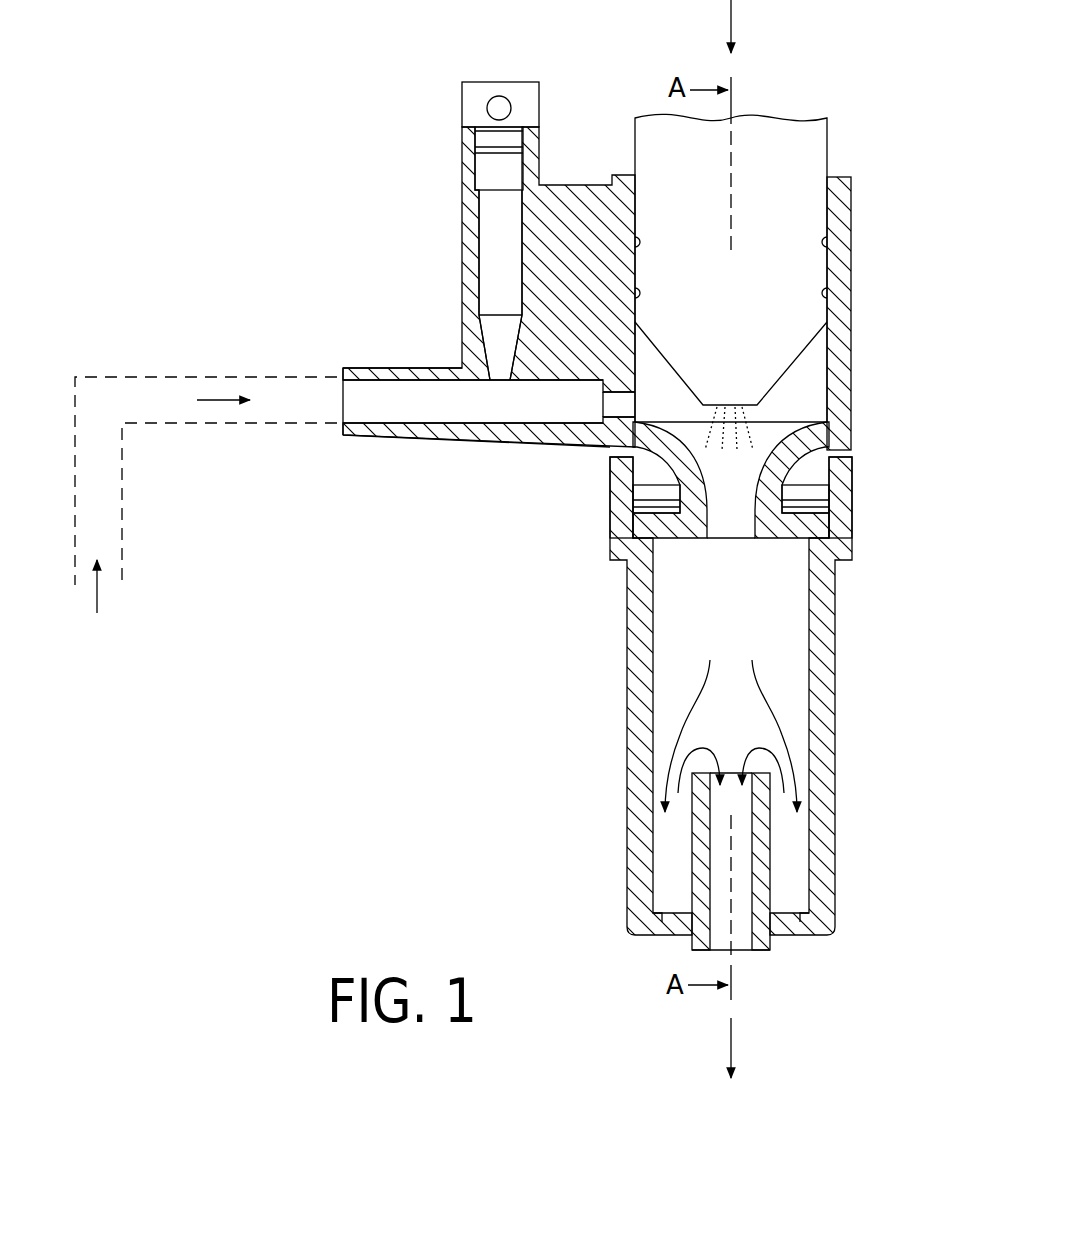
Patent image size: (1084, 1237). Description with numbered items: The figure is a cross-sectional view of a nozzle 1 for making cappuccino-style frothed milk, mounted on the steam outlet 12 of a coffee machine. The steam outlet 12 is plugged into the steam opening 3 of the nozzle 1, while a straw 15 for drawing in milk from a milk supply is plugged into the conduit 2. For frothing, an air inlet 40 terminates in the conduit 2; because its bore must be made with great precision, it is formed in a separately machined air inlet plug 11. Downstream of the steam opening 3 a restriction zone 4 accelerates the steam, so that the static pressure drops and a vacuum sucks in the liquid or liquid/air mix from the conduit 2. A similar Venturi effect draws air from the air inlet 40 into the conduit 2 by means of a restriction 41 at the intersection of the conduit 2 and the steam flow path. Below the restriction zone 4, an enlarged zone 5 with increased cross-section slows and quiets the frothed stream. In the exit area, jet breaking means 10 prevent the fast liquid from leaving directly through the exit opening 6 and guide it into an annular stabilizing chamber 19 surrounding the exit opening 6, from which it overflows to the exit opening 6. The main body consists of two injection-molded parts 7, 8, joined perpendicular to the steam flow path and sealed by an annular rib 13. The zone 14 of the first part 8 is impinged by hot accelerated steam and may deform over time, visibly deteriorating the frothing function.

The nozzle 1 is at (638, 520).
The conduit 2 is at (387, 392).
The steam opening 3 is at (650, 112).
The restriction zone 4 is at (745, 542).
The enlarged zone 5 is at (787, 660).
The exit opening 6 is at (745, 952).
The second part of main body 7 is at (625, 700).
The first part of main body 8 is at (855, 368).
The jet breaking means 10 is at (772, 872).
The air inlet plug 11 is at (461, 104).
The steam outlet 12 is at (838, 148).
The annular rib 13 is at (612, 532).
The zone of the first part 14 is at (683, 447).
The straw 15 is at (167, 377).
The annular stabilizing chamber 19 is at (660, 875).
The air inlet 40 is at (498, 97).
The restriction 41 is at (605, 402).